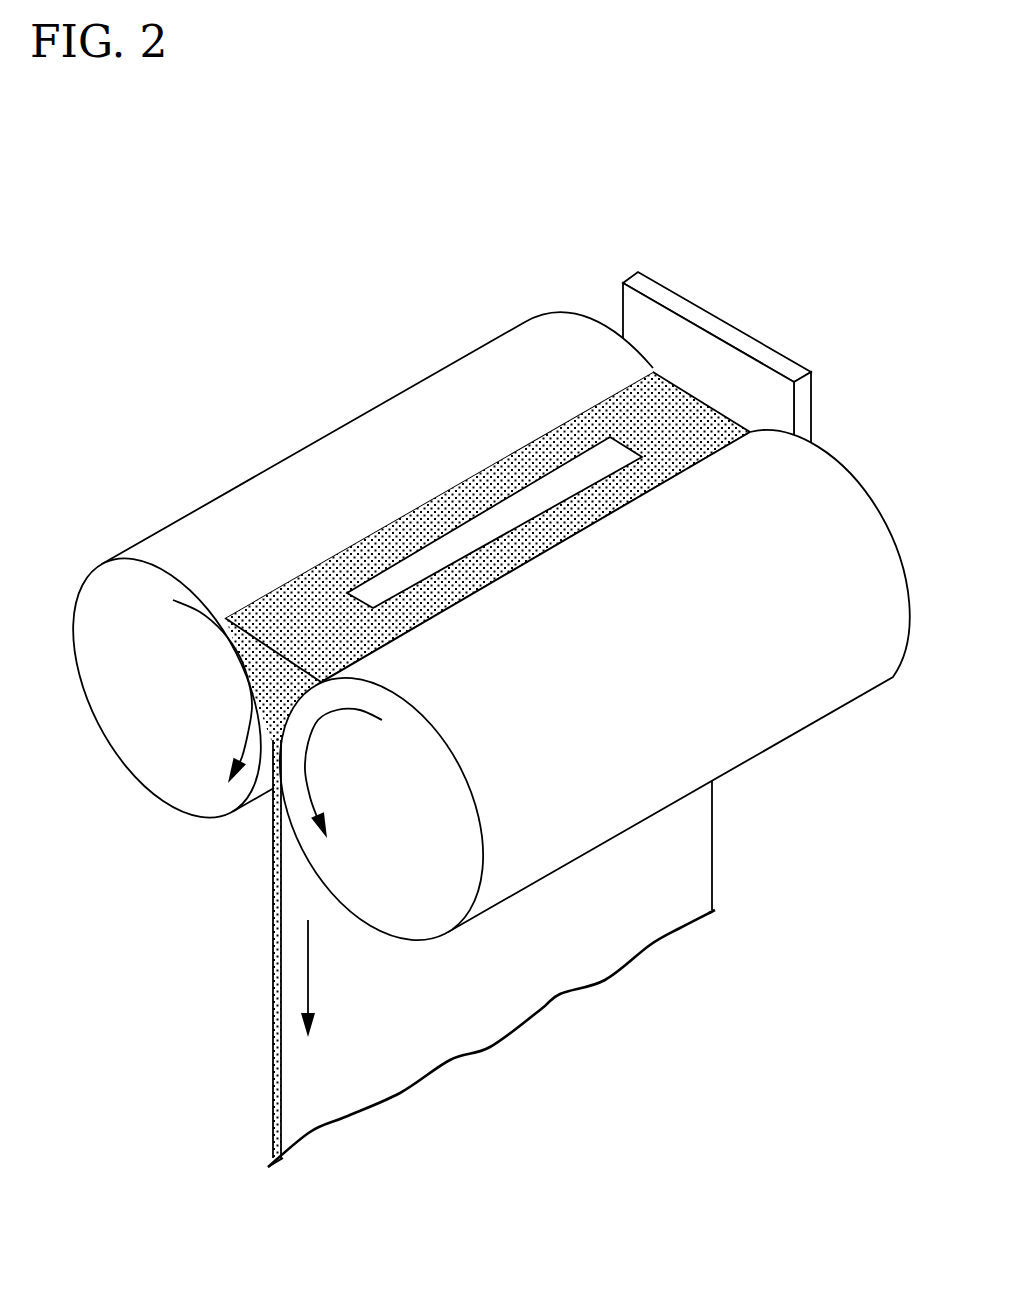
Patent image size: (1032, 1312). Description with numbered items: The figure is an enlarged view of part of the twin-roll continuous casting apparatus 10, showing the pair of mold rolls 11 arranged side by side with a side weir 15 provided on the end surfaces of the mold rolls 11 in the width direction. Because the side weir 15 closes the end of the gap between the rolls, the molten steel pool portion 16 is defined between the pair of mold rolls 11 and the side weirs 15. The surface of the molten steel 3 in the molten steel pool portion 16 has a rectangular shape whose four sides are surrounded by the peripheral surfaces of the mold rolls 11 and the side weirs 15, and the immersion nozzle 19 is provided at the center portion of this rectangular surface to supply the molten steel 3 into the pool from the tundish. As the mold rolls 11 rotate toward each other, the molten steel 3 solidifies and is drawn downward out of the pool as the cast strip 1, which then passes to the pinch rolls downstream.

The cast strip 1 is at (540, 942).
The molten steel 3 is at (318, 605).
The twin-roll continuous casting apparatus 10 is at (807, 177).
The mold roll 11 is at (242, 523).
The side weir 15 is at (723, 330).
The molten steel pool portion 16 is at (448, 473).
The immersion nozzle 19 is at (553, 484).